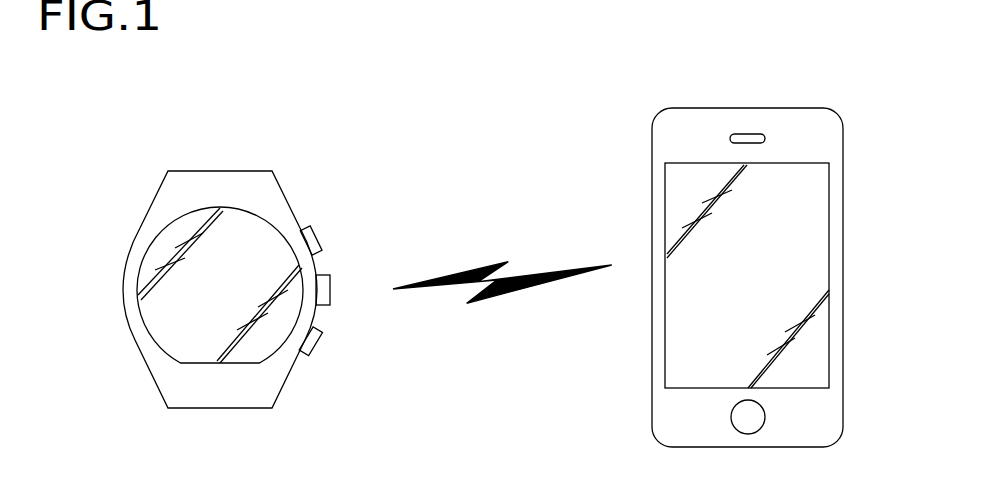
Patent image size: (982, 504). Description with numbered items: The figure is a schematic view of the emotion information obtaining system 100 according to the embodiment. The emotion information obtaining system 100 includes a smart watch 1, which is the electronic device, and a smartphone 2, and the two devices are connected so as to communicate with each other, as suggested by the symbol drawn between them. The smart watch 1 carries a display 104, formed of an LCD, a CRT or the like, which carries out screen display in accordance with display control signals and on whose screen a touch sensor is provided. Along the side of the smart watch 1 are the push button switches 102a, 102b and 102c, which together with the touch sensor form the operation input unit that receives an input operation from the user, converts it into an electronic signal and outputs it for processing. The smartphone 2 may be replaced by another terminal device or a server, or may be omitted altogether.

The emotion information obtaining system 100 is at (540, 90).
The smart watch 1 is at (265, 263).
The smartphone 2 is at (795, 105).
The display 104 is at (255, 227).
The push button switch 102a is at (313, 236).
The push button switch 102b is at (325, 297).
The push button switch 102c is at (313, 340).